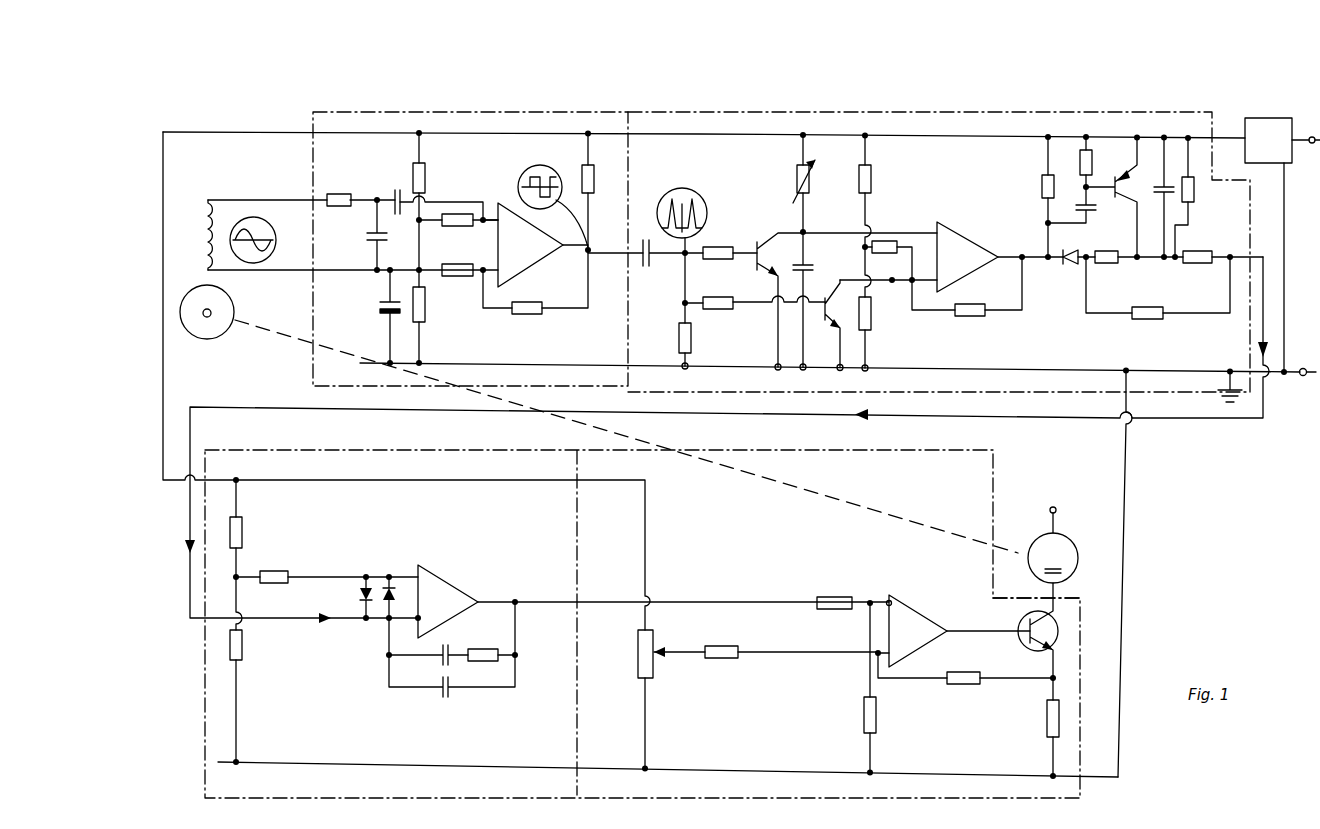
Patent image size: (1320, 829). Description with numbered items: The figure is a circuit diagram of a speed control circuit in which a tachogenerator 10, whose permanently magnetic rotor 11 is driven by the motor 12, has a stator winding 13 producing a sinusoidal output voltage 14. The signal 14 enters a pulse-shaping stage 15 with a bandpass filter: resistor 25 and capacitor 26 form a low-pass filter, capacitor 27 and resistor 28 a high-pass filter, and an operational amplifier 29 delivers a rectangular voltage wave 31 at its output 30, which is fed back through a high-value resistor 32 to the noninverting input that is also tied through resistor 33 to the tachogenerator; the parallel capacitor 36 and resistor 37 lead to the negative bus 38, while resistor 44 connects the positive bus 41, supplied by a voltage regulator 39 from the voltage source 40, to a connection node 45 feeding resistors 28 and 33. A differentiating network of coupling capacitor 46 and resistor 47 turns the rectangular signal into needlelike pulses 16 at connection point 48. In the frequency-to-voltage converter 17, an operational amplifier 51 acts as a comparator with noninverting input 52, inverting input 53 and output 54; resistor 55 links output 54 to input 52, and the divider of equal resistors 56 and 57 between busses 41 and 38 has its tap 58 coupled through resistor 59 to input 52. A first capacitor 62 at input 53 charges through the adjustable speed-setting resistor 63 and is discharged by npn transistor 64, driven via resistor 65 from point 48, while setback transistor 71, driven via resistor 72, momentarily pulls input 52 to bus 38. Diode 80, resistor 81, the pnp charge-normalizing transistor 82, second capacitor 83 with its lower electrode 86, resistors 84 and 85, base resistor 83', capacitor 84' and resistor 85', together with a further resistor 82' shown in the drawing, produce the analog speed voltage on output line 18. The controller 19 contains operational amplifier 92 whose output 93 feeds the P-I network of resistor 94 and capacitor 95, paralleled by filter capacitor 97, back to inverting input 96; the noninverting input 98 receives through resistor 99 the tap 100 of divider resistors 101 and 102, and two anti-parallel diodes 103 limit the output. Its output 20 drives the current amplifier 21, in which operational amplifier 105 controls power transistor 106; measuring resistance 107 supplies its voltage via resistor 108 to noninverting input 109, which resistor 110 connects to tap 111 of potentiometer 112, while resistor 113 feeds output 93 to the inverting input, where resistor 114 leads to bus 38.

The tachogenerator 10 is at (170, 308).
The permanently magnetic rotor 11 is at (232, 332).
The motor 12 is at (1078, 560).
The stator winding 13 is at (212, 212).
The sinusoidal output voltage 14 is at (253, 217).
The pulse-shaping stage 15 is at (500, 110).
The needlelike pulses 16 is at (705, 190).
The frequency-to-voltage converter 17 is at (975, 113).
The output line 18 is at (1225, 418).
The amplifying controller 19 is at (380, 450).
The output of controller 20 is at (605, 603).
The current amplifier 21 is at (998, 468).
The resistor 25 is at (345, 200).
The capacitor 26 is at (377, 240).
The capacitor 27 is at (395, 195).
The resistor 28 is at (462, 226).
The operational amplifier 29 is at (533, 254).
The output 30 is at (592, 258).
The rectangular voltage wave 31 is at (530, 168).
The resistor 32 is at (530, 314).
The resistor 33 is at (462, 276).
The capacitor 36 is at (383, 310).
The resistor 37 is at (425, 312).
The negative voltage bus 38 is at (475, 363).
The voltage regulator 39 is at (1272, 118).
The voltage source 40 is at (1310, 137).
The positive voltage bus 41 is at (700, 134).
The resistor 44 is at (425, 180).
The junction 45 is at (419, 222).
The coupling capacitor 46 is at (648, 270).
The resistor 47 is at (679, 338).
The connection point 48 is at (685, 256).
The operational amplifier 51 is at (970, 266).
The noninverting input 52 is at (920, 282).
The inverting input 53 is at (915, 232).
The output 54 is at (1022, 257).
The resistor 55 is at (968, 316).
The resistor 56 is at (871, 178).
The resistor 57 is at (871, 314).
The tap 58 is at (865, 247).
The resistor 59 is at (885, 253).
The first capacitor 62 is at (803, 262).
The adjustable resistor 63 is at (797, 180).
The npn transistor 64 is at (757, 247).
The resistor 65 is at (722, 258).
The setback transistor 71 is at (828, 318).
The resistor 72 is at (718, 308).
The diode 80 is at (1070, 264).
The resistor 81 is at (1107, 264).
The pnp transistor 82 is at (1113, 199).
The resistor 82' is at (1203, 199).
The second capacitor 83 is at (1157, 199).
The resistor 83' is at (1105, 163).
The resistor 84 is at (1223, 242).
The capacitor 84' is at (1072, 206).
The resistor 85 is at (1158, 288).
The resistor 85' is at (1027, 198).
The lower electrode 86 is at (1164, 255).
The operational amplifier 92 is at (450, 611).
The output 93 is at (500, 602).
The resistor 94 is at (490, 660).
The capacitor 95 is at (448, 650).
The inverting input 96 is at (416, 624).
The capacitor 97 is at (448, 695).
The noninverting input 98 is at (413, 577).
The resistor 99 is at (275, 572).
The junction 100 is at (236, 577).
The resistor 101 is at (242, 525).
The resistor 102 is at (242, 648).
The diodes 103 is at (389, 588).
The operational amplifier 105 is at (929, 639).
The power transistor 106 is at (1060, 628).
The measuring resistance 107 is at (1047, 718).
The resistor 108 is at (963, 685).
The noninverting input 109 is at (835, 652).
The resistor 110 is at (730, 660).
The tap 111 is at (668, 656).
The potentiometer 112 is at (653, 640).
The resistor 113 is at (835, 597).
The resistor 114 is at (876, 715).